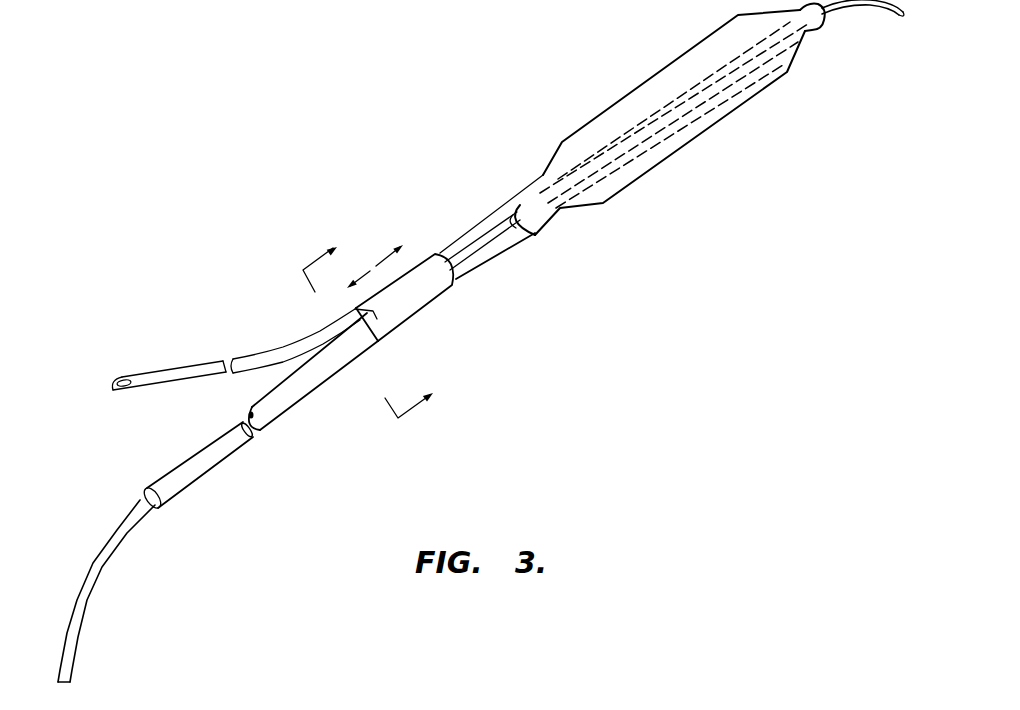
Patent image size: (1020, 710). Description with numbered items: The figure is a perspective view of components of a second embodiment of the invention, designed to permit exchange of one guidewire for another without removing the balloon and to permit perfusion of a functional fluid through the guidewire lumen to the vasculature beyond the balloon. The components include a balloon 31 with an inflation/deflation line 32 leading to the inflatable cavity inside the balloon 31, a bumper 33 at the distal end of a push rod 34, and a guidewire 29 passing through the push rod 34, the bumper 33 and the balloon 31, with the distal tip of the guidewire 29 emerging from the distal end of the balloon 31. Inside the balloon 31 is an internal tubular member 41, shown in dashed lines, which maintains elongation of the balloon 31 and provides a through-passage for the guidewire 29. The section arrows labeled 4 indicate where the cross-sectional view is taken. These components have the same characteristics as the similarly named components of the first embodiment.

The section line 4- 4 is at (379, 321).
The guidewire 29 is at (483, 259).
The balloon 31 is at (708, 36).
The inflation/deflation line 32 is at (491, 215).
The bumper 33 is at (470, 300).
The push rod 34 is at (203, 475).
The internal tubular member 41 is at (709, 104).